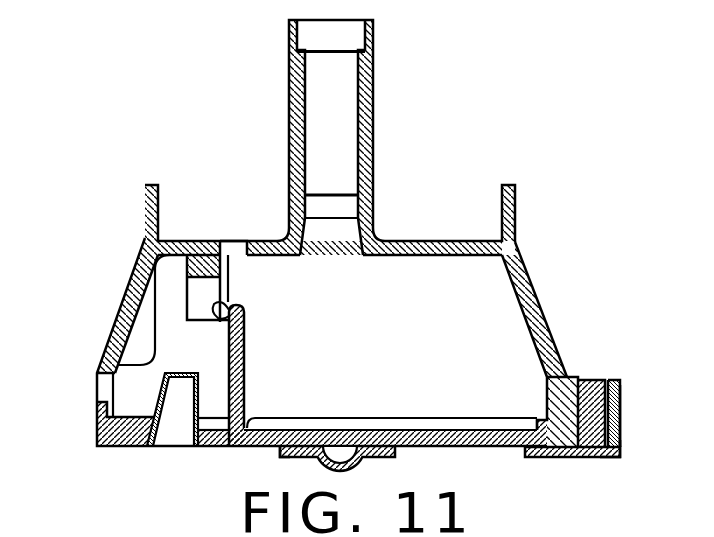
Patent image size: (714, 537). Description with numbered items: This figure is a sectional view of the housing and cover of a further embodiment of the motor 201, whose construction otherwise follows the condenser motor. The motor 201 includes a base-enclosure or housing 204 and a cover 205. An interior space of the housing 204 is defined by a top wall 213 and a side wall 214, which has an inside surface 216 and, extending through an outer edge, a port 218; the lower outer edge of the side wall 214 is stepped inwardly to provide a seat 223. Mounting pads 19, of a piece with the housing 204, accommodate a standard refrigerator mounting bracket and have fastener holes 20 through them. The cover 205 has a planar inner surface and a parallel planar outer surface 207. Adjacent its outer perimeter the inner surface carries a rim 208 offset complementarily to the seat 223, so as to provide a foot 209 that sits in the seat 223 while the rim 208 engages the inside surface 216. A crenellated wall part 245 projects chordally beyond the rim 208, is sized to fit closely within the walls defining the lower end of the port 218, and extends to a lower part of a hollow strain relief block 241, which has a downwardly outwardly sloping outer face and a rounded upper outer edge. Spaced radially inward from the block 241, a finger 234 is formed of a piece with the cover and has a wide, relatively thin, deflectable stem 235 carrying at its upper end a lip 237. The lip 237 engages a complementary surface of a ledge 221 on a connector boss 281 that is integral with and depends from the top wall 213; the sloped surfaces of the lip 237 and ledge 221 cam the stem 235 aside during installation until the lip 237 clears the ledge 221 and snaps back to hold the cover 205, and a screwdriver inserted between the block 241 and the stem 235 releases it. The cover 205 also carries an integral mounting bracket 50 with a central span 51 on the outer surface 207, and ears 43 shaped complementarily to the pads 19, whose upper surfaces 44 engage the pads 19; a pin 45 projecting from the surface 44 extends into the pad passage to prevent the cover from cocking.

The motor 201 is at (542, 214).
The housing 204 is at (526, 266).
The top wall 213 is at (443, 241).
The side wall 214 is at (550, 301).
The inside surface 216 is at (536, 348).
The connector boss 281 is at (229, 268).
The ledge 221 is at (218, 303).
The lip 237 is at (245, 326).
The finger 234 is at (246, 362).
The stem 235 is at (247, 389).
The strain relief block 241 is at (180, 368).
The port 218 is at (105, 387).
The crenellated wall part 245 is at (98, 436).
The foot 209 is at (213, 447).
The outer surface 207 is at (502, 448).
The rim 208 is at (422, 418).
The cover 205 is at (357, 429).
The seat 223 is at (524, 420).
The mounting bracket 50 is at (400, 456).
The central span 51 is at (290, 462).
The fastener holes 20 is at (592, 378).
The mounting pads 19 is at (618, 380).
The pin 45 is at (622, 399).
The upper surfaces 44 is at (622, 452).
The ears 43 is at (598, 450).